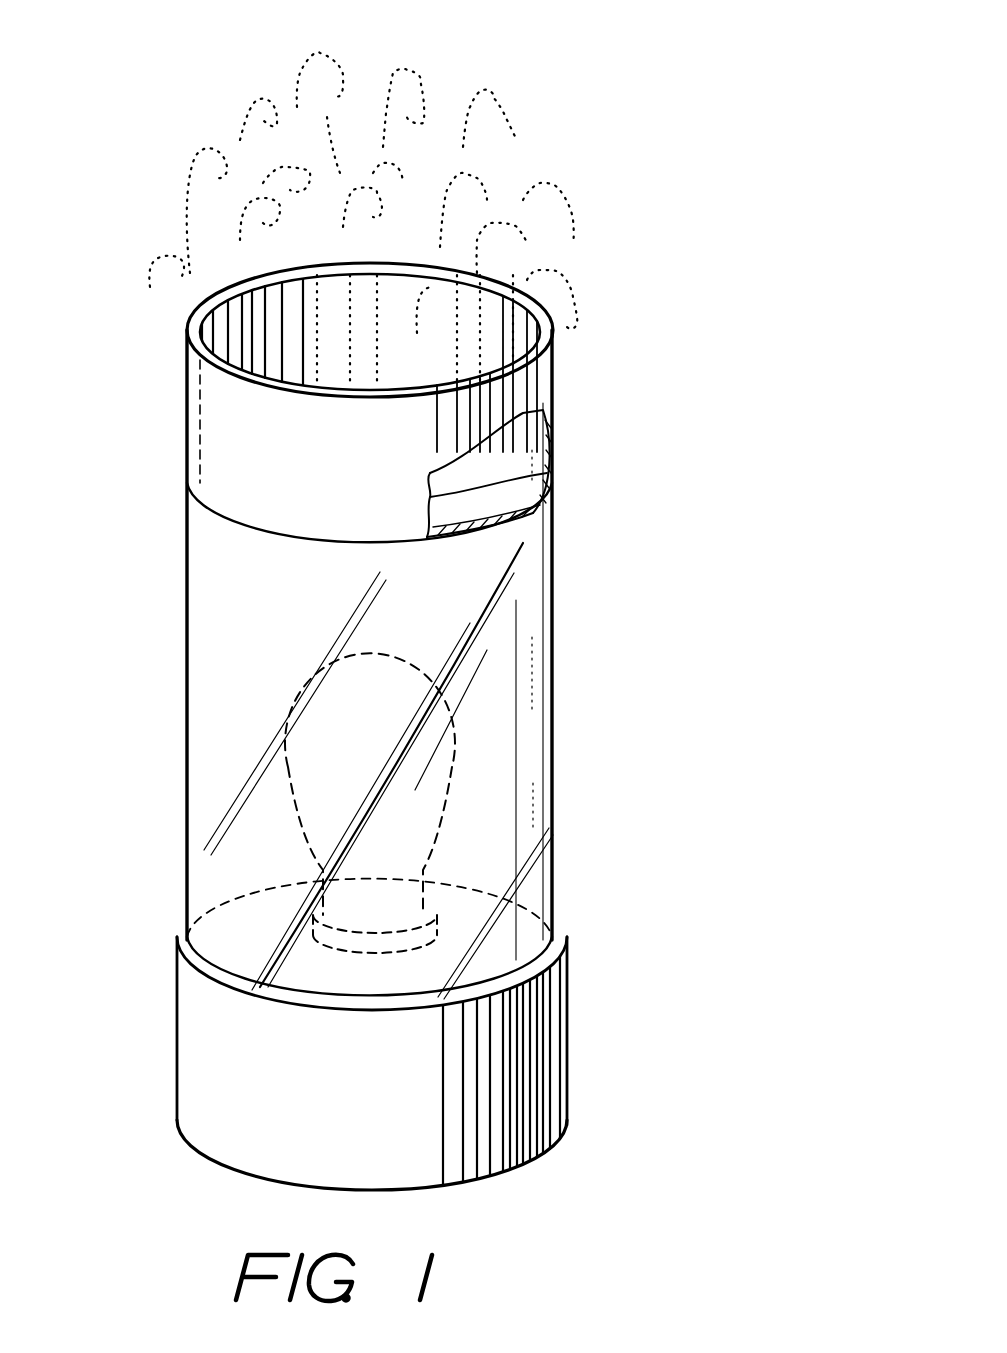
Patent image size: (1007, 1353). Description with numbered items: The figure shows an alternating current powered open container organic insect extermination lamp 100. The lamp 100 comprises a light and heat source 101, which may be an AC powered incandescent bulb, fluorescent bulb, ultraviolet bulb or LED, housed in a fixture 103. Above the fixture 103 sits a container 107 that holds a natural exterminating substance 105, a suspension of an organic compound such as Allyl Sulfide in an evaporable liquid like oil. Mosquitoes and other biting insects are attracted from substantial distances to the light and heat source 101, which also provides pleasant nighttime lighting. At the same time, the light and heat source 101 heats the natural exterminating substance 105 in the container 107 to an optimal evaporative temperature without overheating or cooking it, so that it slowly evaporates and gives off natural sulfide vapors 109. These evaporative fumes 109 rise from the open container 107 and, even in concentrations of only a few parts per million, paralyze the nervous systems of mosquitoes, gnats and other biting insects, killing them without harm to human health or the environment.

The lamp 100 is at (392, 604).
The light and heat source 101 is at (452, 759).
The fixture 103 is at (557, 918).
The natural exterminating substance 105 is at (525, 487).
The container 107 is at (555, 368).
The natural sulfide vapors 109 is at (125, 138).